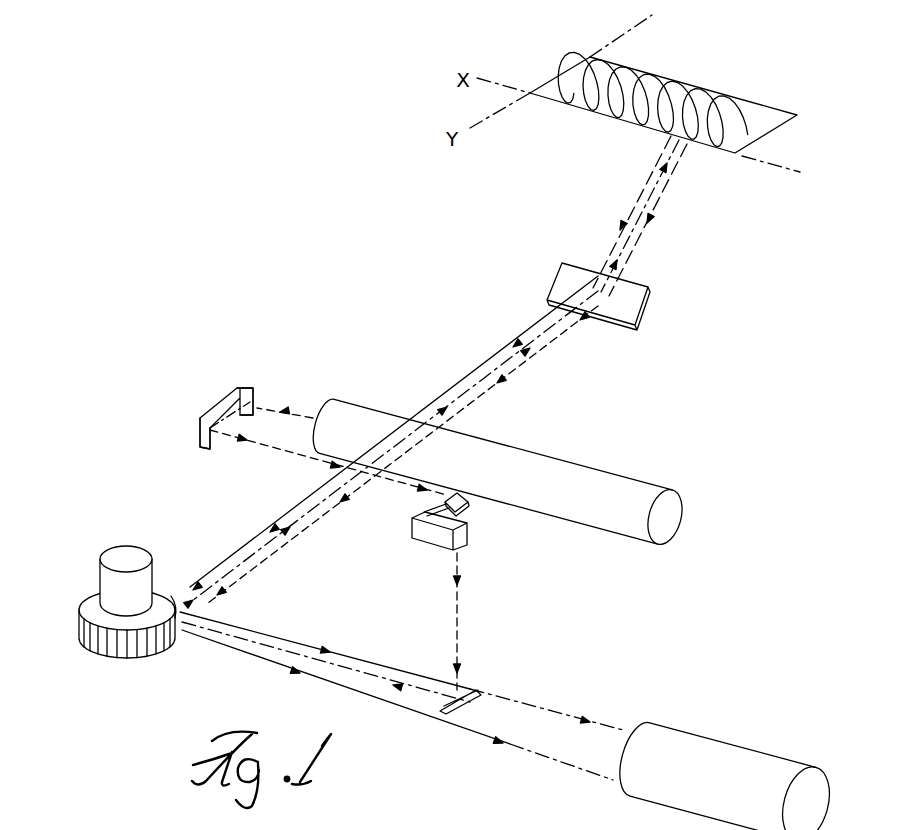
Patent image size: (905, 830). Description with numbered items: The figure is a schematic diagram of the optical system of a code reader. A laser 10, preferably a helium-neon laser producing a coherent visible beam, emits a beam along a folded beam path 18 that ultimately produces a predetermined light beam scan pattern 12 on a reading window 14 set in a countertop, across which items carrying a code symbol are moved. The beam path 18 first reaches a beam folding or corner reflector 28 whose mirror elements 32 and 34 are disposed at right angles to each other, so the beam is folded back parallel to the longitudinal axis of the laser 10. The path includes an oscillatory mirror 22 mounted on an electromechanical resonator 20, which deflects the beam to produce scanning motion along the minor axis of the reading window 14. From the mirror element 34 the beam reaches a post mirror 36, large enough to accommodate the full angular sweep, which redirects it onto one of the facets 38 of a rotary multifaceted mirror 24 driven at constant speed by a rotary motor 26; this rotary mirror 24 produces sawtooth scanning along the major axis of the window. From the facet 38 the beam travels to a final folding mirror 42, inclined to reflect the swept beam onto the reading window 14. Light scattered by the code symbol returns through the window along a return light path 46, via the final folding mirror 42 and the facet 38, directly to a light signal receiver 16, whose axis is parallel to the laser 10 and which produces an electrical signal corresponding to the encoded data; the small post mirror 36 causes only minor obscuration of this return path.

The laser 10 is at (573, 473).
The light beam scan pattern 12 is at (580, 72).
The reading window 14 is at (757, 98).
The light signal receiver 16 is at (760, 770).
The beam path 18 is at (483, 383).
The electromechanical resonator 20 is at (423, 534).
The mirror 22 is at (469, 502).
The rotary multifaceted mirror 24 is at (127, 660).
The rotary motor 26 is at (107, 577).
The corner reflector 28 is at (225, 391).
The mirror element 32 is at (254, 392).
The mirror element 34 is at (200, 428).
The post mirror 36 is at (481, 695).
The facet 38 is at (169, 597).
The final folding mirror 42 is at (562, 266).
The return light path 46 is at (658, 207).